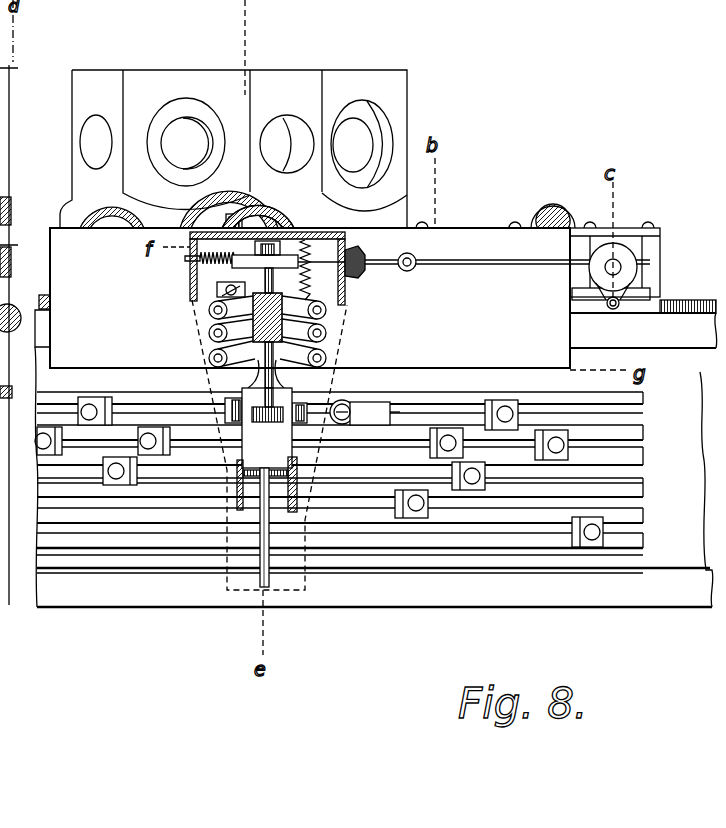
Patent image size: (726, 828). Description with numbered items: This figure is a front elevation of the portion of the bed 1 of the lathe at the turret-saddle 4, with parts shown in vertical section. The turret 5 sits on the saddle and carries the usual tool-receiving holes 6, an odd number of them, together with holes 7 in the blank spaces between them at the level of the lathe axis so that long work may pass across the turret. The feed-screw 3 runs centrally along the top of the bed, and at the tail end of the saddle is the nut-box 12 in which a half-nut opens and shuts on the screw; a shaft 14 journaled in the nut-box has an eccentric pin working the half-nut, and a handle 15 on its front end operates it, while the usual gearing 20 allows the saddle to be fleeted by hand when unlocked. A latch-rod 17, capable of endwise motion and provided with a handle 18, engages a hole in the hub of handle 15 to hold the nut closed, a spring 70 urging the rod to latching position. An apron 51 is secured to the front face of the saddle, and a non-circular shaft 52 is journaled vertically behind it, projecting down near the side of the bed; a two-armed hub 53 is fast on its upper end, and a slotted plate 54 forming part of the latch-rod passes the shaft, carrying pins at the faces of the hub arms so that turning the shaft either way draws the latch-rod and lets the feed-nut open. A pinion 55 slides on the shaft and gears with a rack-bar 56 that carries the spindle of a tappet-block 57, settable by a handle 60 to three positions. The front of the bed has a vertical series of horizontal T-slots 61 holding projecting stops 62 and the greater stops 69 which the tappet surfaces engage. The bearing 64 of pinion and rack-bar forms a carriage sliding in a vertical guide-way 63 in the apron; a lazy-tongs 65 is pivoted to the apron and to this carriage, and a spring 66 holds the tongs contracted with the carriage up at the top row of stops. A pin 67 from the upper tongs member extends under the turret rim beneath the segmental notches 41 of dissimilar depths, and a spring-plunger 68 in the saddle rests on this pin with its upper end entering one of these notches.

The bed 1 is at (692, 487).
The feed-screw 3 is at (703, 307).
The turret-saddle 4 is at (563, 328).
The turret 5 is at (393, 78).
The tool-receiving holes 6 is at (380, 130).
The holes 7 is at (288, 132).
The nut-box 12 is at (657, 250).
The shaft 14 is at (615, 267).
The handle 15 is at (617, 290).
The latch-rod 17 is at (490, 266).
The handle 18 is at (410, 271).
The gearing 20 is at (557, 215).
The segmental notches 41 is at (110, 222).
The apron 51 is at (347, 288).
The non-circular shaft 52 is at (270, 578).
The two-armed hub 53 is at (300, 233).
The slotted plate 54 is at (303, 273).
The pinion 55 is at (272, 423).
The rack-bar 56 is at (327, 403).
The tappet-block 57 is at (365, 407).
The handle 60 is at (343, 420).
The T-slots 61 is at (422, 412).
The projecting stops 62 is at (503, 403).
The vertical guide-way 63 is at (238, 475).
The bearing 64 is at (250, 430).
The lazy-tongs 65 is at (208, 335).
The spring 66 is at (290, 296).
The pin 67 is at (222, 298).
The spring-plunger 68 is at (232, 215).
The second projecting stops 69 is at (42, 441).
The spring 70 is at (197, 263).